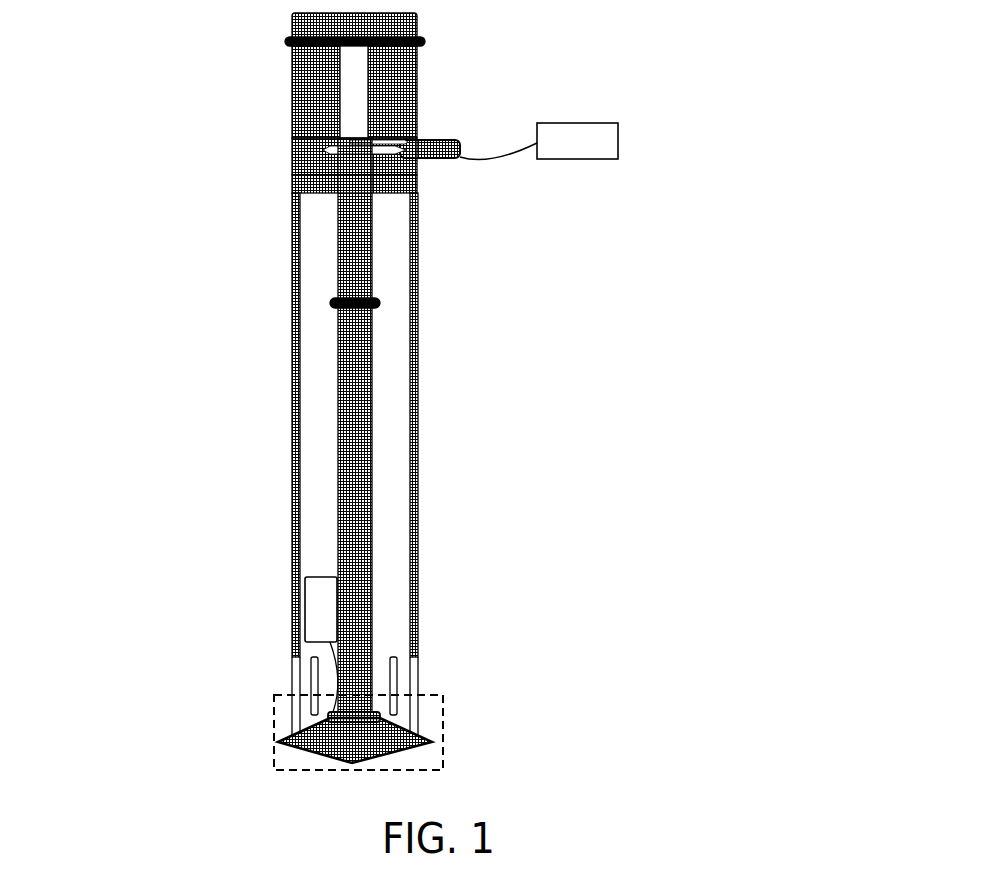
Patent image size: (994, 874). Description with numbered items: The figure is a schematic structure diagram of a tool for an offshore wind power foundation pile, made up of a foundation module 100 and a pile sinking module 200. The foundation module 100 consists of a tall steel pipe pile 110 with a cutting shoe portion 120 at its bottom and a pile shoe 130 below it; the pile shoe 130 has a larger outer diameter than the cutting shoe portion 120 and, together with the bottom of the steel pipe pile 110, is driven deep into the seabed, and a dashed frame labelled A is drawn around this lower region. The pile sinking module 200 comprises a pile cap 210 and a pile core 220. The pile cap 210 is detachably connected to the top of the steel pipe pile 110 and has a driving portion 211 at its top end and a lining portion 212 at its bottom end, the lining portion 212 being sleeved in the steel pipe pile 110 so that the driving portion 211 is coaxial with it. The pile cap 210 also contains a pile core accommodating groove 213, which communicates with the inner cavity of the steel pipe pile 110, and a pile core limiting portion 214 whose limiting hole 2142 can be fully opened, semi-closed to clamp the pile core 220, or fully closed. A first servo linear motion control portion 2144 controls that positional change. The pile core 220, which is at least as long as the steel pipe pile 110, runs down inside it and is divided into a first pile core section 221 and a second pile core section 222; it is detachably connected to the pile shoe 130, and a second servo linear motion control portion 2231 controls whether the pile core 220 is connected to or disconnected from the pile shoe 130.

The foundation module 100 is at (488, 478).
The steel pipe pile 110 is at (418, 523).
The cutting shoe portion 120 is at (420, 683).
The pile shoe 130 is at (434, 740).
The pile sinking module 200 is at (435, 365).
The pile cap 210 is at (486, 116).
The driving portion 211 is at (292, 22).
The lining portion 212 is at (420, 190).
The pile core accommodating groove 213 is at (357, 100).
The pile core limiting portion 214 is at (574, 140).
The limiting hole 2142 is at (425, 132).
The first servo linear motion control portion 2144 is at (590, 143).
The pile core 220 is at (347, 430).
The first pile core section 221 is at (372, 283).
The second pile core section 222 is at (360, 358).
The second servo linear motion control portion 2231 is at (323, 597).
The detail region A is at (283, 723).